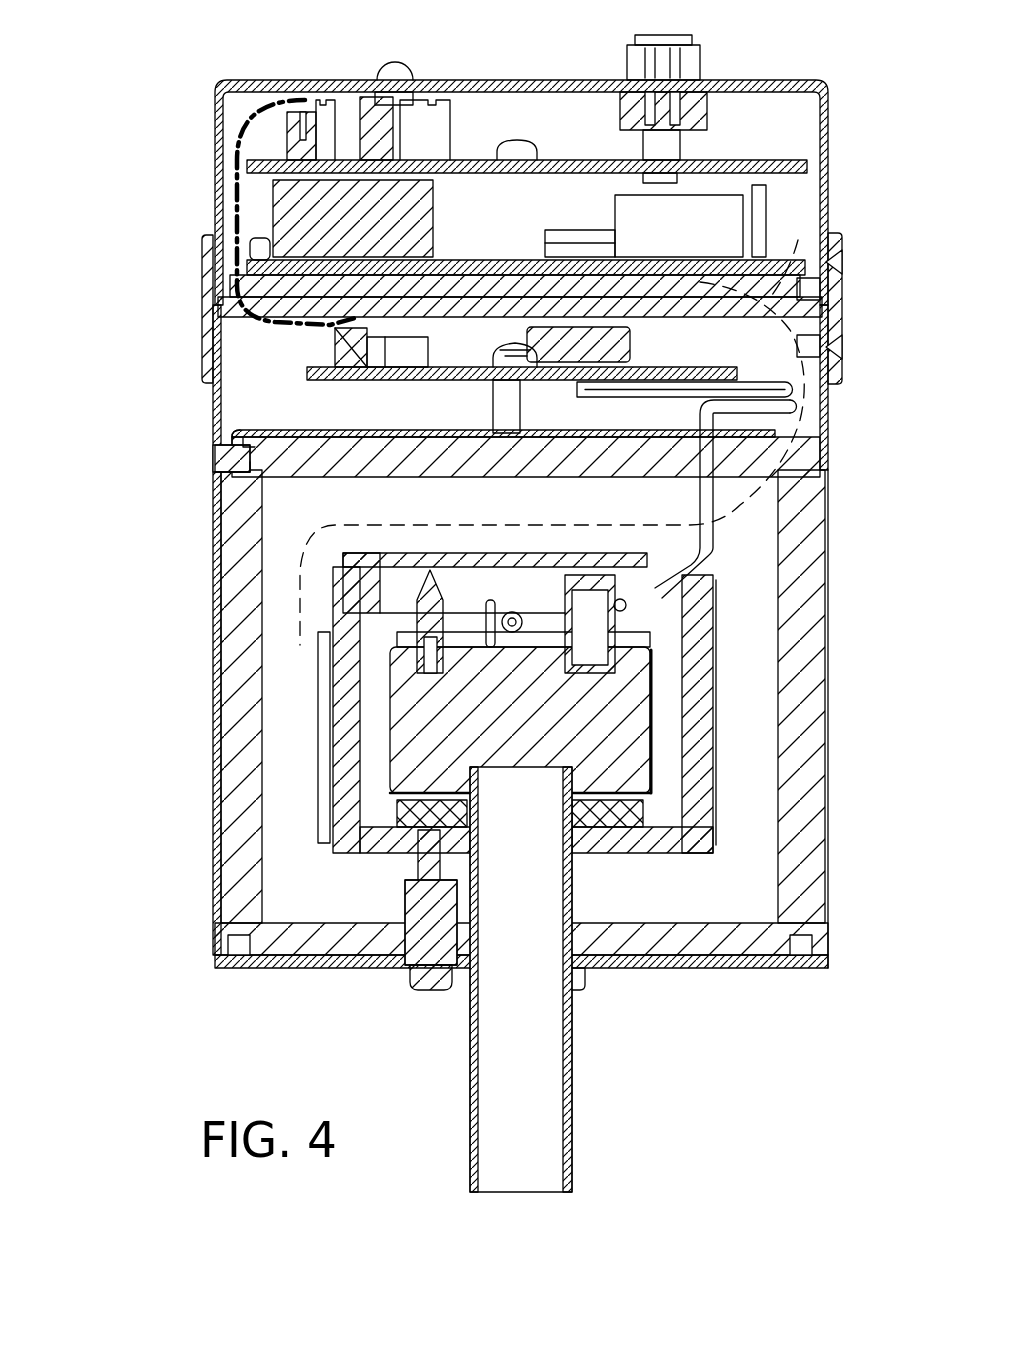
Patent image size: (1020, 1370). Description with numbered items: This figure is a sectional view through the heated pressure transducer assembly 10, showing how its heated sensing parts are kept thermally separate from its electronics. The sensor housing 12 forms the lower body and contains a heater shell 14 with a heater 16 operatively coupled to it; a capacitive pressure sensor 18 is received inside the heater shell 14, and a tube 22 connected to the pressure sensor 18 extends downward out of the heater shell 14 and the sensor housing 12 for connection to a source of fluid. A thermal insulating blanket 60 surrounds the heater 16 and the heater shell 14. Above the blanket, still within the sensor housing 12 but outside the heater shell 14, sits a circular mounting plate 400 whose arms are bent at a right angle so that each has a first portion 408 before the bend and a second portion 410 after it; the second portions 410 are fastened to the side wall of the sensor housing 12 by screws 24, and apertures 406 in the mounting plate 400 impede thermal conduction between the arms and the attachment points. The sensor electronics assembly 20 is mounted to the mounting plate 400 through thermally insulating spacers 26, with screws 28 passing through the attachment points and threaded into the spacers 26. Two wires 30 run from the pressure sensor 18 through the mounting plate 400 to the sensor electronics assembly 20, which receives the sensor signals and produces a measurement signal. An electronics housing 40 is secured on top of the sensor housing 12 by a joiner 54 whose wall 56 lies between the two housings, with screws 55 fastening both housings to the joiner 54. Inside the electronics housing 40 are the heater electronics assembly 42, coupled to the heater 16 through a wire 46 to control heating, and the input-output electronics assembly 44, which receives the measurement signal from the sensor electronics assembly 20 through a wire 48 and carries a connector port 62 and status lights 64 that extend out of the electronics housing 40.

The heated pressure transducer assembly 10 is at (152, 473).
The sensor housing 12 is at (830, 735).
The heater shell 14 is at (665, 845).
The heater 16 is at (716, 757).
The capacitive pressure sensor 18 is at (633, 697).
The sensor electronics assembly 20 is at (665, 372).
The tube 22 is at (573, 1102).
The screws 24 is at (216, 455).
The thermally insulating spacers 26 is at (540, 410).
The screws 28 is at (505, 352).
The wire 30 is at (714, 548).
The electronics housing 40 is at (830, 160).
The heater electronics assembly 42 is at (445, 260).
The input-output electronics assembly 44 is at (722, 160).
The wire 46 is at (485, 525).
The wire 48 is at (233, 165).
The joiner 54 is at (843, 305).
The screws 55 is at (845, 258).
The wall 56 is at (205, 312).
The thermal insulating blanket 60 is at (545, 275).
The connector port 62 is at (703, 60).
The status lights 64 is at (405, 66).
The mounting plate 400 is at (345, 430).
The apertures 406 is at (268, 430).
The first portion 408 is at (243, 435).
The second portion 410 is at (214, 472).